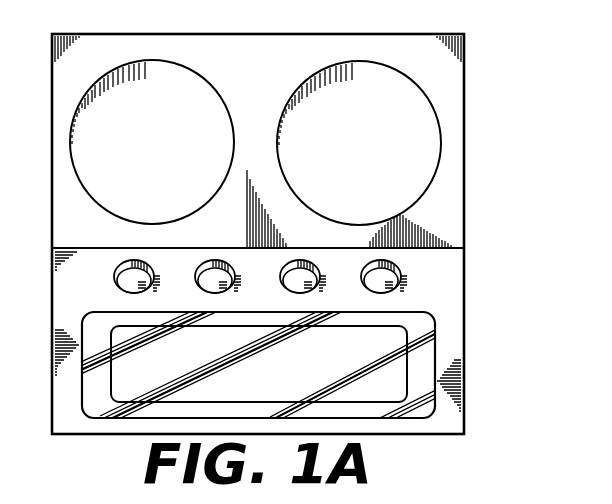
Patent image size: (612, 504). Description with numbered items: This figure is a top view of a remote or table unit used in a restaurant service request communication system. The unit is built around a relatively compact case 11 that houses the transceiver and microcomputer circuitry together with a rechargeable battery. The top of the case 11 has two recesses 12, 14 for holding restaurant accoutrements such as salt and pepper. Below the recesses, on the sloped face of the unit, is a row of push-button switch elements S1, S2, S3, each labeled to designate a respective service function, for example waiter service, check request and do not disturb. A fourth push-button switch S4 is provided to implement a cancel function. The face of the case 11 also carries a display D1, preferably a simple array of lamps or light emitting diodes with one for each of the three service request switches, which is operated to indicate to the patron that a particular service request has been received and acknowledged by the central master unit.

The case 11 is at (464, 232).
The recess 12 is at (143, 151).
The recess 14 is at (350, 152).
The push-button switch element S1 is at (114, 282).
The push-button switch element S2 is at (195, 282).
The push-button switch element S3 is at (280, 282).
The push-button switch S4 is at (361, 282).
The display D1 is at (428, 319).